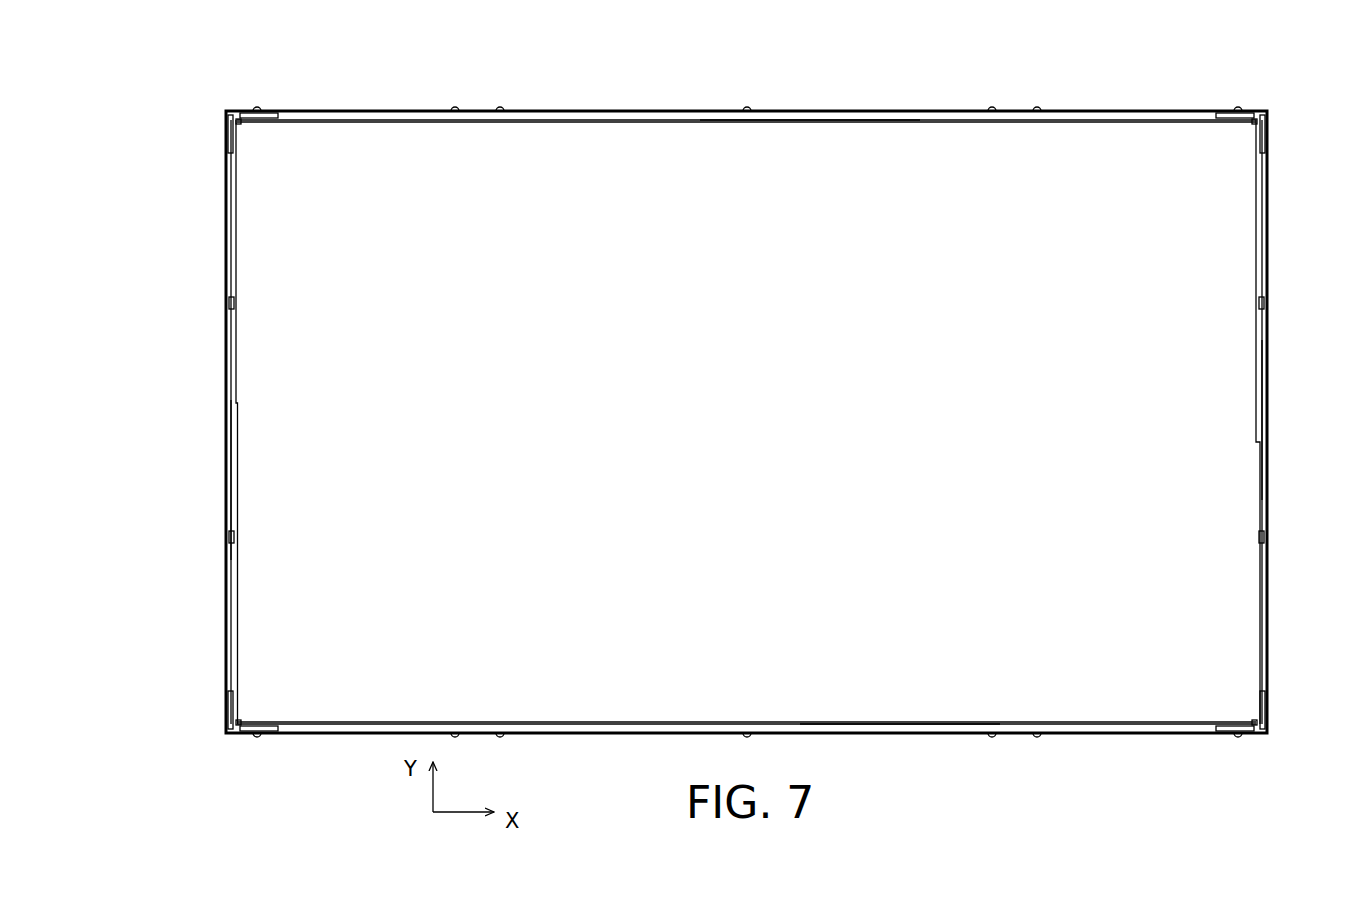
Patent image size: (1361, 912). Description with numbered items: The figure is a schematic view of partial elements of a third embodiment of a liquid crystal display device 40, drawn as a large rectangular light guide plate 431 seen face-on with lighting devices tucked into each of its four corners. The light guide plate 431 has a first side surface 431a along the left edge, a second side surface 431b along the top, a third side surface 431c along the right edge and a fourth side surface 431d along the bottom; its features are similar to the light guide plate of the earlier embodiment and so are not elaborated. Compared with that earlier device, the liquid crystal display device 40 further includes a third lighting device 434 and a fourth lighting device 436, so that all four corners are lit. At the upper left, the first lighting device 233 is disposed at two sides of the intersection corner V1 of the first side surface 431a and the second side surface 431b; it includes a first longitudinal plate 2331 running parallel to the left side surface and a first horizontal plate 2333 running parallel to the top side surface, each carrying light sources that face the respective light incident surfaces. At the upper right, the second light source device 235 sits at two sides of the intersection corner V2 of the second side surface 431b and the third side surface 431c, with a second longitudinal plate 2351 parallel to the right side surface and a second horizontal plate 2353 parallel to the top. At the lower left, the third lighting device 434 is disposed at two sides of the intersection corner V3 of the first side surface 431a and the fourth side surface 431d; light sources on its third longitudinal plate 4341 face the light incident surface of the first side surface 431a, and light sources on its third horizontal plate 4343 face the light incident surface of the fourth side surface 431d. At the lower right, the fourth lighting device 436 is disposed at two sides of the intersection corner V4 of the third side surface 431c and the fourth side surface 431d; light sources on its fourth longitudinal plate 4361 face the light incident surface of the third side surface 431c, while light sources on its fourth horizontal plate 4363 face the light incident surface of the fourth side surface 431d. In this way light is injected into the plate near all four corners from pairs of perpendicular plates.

The liquid crystal display device 40 is at (477, 86).
The light guide plate 431 is at (553, 117).
The first side surface 431a is at (236, 472).
The second side surface 431b is at (810, 118).
The third side surface 431c is at (1258, 412).
The fourth side surface 431d is at (925, 735).
The first lighting device 233 is at (251, 99).
The first longitudinal plate 2331 is at (194, 117).
The first horizontal plate 2333 is at (263, 113).
The second light source device 235 is at (1255, 99).
The second longitudinal plate 2351 is at (1301, 117).
The second horizontal plate 2353 is at (1250, 113).
The third lighting device 434 is at (251, 750).
The third longitudinal plate 4341 is at (192, 732).
The third horizontal plate 4343 is at (263, 731).
The fourth lighting device 436 is at (1255, 750).
The fourth longitudinal plate 4361 is at (1301, 732).
The fourth horizontal plate 4363 is at (1250, 731).
The intersection corner V1 is at (241, 123).
The intersection corner V2 is at (1252, 123).
The intersection corner V3 is at (241, 721).
The intersection corner V4 is at (1252, 721).